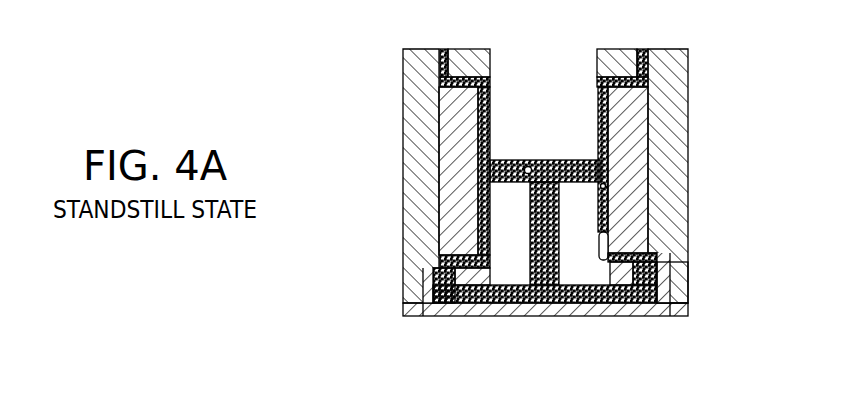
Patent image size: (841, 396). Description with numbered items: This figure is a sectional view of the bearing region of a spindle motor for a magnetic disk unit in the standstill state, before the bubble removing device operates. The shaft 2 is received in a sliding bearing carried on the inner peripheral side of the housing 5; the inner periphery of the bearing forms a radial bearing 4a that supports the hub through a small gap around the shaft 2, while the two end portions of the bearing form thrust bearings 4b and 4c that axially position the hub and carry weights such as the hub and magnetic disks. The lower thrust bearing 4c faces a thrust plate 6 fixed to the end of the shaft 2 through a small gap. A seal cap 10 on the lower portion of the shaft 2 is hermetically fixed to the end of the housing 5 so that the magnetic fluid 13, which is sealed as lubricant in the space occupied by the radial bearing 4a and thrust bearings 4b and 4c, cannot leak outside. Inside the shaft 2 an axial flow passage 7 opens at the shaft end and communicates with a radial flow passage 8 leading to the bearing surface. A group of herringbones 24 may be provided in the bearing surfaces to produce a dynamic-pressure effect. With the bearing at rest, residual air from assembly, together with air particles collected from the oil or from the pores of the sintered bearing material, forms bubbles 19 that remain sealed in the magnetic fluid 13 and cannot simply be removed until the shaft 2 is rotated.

The shaft 2 is at (507, 272).
The radial bearing 4a is at (610, 218).
The thrust bearing 4b is at (655, 82).
The thrust bearing 4c is at (438, 264).
The housing 5 is at (683, 290).
The thrust plate 6 is at (605, 287).
The axial flow passage 7 is at (550, 265).
The radial flow passage 8 is at (597, 172).
The seal cap 10 is at (660, 305).
The magnetic fluid 13 is at (540, 232).
The bubbles 19 is at (466, 78).
The herringbones 24 is at (603, 98).